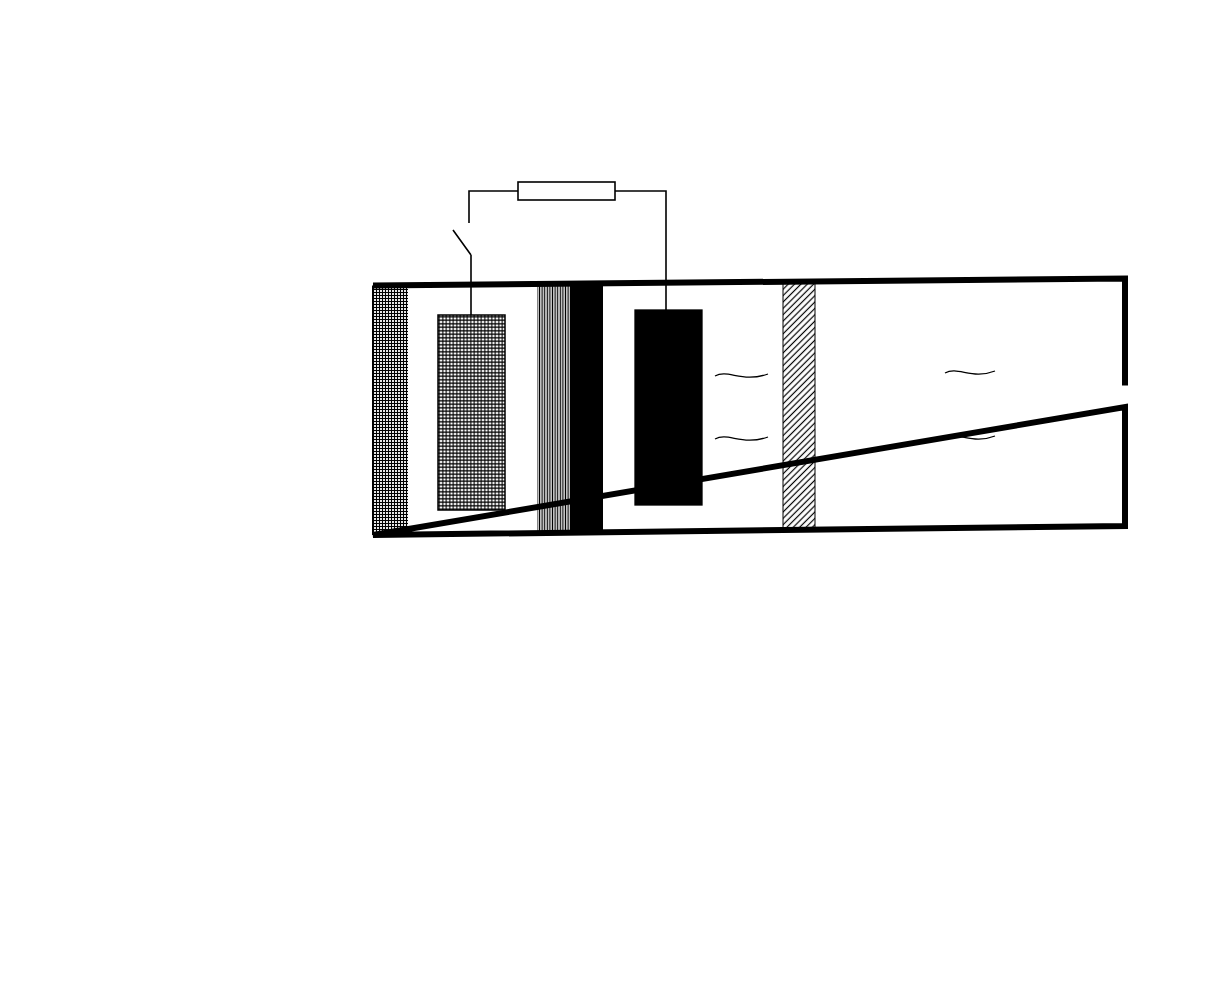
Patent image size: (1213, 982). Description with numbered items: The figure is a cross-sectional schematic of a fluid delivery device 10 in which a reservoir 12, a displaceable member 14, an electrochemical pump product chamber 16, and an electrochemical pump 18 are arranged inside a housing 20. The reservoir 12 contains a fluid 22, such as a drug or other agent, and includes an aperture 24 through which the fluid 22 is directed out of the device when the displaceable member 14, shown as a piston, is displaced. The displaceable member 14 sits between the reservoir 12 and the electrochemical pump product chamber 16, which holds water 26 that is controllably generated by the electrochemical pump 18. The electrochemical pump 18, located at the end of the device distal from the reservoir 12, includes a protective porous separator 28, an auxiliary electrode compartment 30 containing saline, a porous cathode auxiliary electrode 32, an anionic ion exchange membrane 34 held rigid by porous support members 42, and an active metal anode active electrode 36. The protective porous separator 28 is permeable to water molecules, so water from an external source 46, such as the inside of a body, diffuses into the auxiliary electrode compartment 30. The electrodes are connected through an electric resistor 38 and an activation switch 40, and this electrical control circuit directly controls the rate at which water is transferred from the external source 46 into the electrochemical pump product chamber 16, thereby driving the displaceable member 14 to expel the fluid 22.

The fluid delivery device 10 is at (813, 114).
The reservoir 12 is at (960, 300).
The displaceable member 14 is at (815, 358).
The electrochemical pump product chamber 16 is at (705, 300).
The electrochemical pump 18 is at (540, 668).
The housing 20 is at (853, 275).
The fluid 22 is at (970, 405).
The aperture 24 is at (1122, 398).
The water 26 is at (741, 407).
The protective porous separator 28 is at (372, 328).
The auxiliary electrode compartment 30 is at (523, 513).
The auxiliary electrode 32 is at (452, 502).
The ion exchange membrane 34 is at (578, 535).
The active electrode 36 is at (663, 503).
The electric resistor 38 is at (568, 192).
The activation switch 40 is at (447, 237).
The support member 42 is at (560, 282).
The external source 46 is at (174, 369).